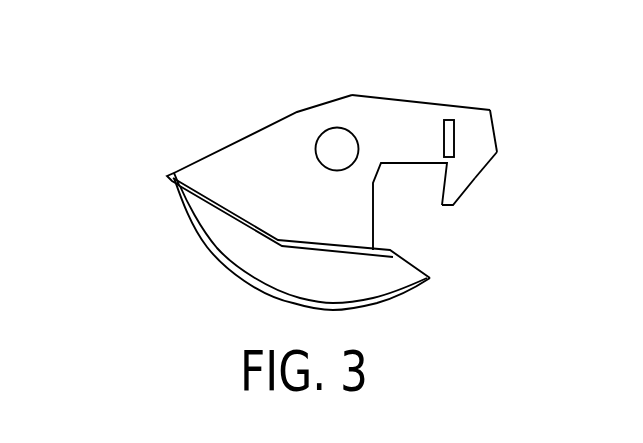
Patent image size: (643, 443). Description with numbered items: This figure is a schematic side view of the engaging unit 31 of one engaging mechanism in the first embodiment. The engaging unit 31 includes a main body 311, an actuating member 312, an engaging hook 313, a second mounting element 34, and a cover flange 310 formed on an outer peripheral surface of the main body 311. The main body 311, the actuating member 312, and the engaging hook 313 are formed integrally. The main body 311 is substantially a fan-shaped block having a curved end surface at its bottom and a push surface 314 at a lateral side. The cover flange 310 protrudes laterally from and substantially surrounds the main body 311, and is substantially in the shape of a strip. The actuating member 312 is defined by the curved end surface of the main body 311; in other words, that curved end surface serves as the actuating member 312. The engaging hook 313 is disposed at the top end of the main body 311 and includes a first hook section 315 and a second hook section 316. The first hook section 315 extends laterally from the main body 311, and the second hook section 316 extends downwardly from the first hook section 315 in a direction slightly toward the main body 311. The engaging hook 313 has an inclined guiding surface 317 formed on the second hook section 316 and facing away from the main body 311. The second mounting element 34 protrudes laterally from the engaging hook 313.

The engaging unit 31 is at (145, 135).
The cover flange 310 is at (167, 178).
The main body 311 is at (257, 177).
The actuating member 312 is at (215, 257).
The engaging hook 313 is at (470, 105).
The push surface 314 is at (373, 222).
The first hook section 315 is at (410, 117).
The second hook section 316 is at (457, 188).
The inclined guiding surface 317 is at (482, 172).
The second mounting element 34 is at (447, 138).